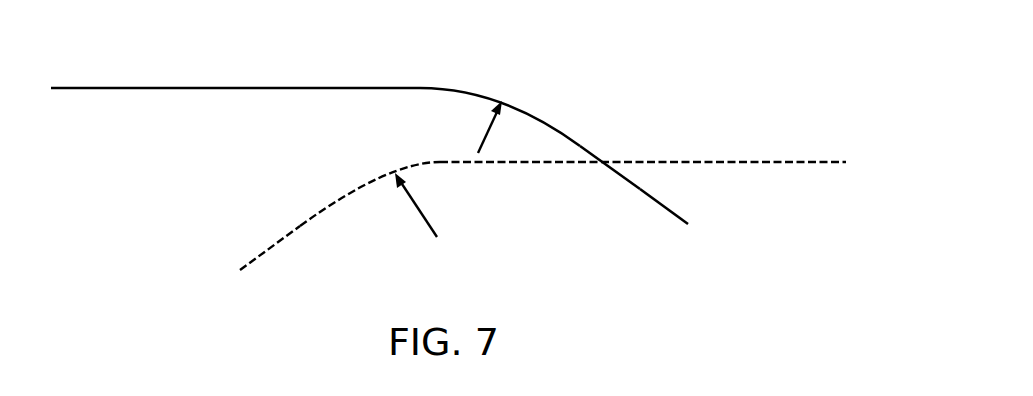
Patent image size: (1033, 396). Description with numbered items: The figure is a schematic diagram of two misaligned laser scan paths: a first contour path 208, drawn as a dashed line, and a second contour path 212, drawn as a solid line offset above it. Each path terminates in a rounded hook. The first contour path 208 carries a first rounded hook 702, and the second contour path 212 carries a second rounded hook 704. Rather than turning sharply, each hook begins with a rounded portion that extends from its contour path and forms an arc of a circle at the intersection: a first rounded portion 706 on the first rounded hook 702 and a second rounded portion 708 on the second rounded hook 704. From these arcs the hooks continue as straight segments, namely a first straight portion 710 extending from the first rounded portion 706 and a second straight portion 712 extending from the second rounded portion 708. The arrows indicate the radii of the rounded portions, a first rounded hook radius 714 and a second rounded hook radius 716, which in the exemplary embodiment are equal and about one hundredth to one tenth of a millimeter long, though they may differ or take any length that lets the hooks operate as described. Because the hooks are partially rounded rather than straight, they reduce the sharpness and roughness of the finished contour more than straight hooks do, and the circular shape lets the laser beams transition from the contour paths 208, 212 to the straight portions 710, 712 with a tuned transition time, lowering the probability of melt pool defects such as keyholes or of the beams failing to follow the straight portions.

The first contour path 208 is at (785, 162).
The second contour path 212 is at (218, 88).
The first rounded hook 702 is at (311, 198).
The second rounded hook 704 is at (554, 152).
The first rounded portion 706 is at (383, 175).
The second rounded portion 708 is at (494, 98).
The first straight portion 710 is at (307, 220).
The second straight portion 712 is at (657, 203).
The first rounded hook radius 714 is at (418, 210).
The second rounded hook radius 716 is at (484, 131).